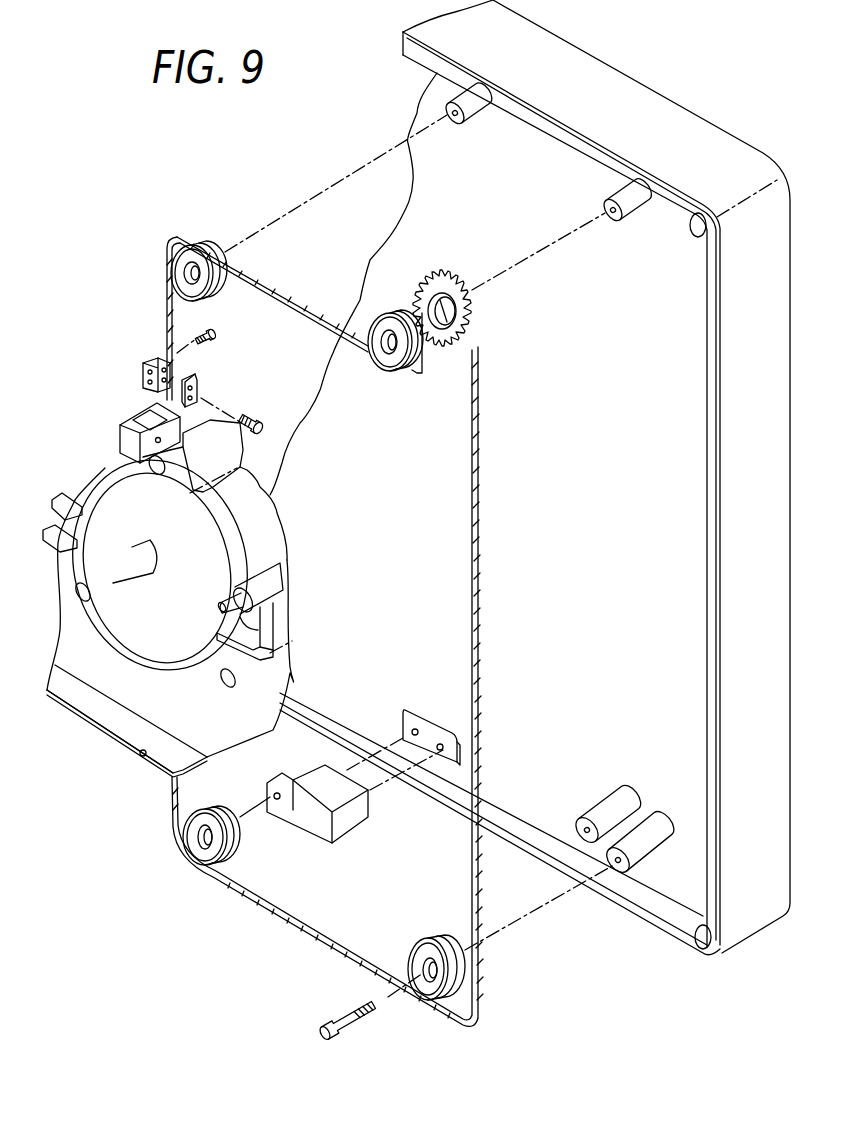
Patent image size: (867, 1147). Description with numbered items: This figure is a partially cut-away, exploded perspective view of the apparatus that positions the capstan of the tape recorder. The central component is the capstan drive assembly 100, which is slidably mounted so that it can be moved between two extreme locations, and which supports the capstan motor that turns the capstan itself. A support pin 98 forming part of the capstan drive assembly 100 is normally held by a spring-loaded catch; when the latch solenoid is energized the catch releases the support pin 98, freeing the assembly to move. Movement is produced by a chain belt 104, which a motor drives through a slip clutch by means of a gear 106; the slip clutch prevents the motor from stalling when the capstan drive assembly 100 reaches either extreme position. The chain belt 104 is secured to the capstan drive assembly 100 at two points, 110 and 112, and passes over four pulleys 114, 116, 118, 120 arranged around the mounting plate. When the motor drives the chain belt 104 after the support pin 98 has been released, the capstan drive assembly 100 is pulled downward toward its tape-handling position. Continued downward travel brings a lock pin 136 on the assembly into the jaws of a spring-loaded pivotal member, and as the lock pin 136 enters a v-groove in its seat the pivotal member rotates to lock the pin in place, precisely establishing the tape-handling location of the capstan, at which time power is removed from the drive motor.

The support pin 98 is at (140, 413).
The capstan drive assembly 100 is at (167, 757).
The chain belt 104 is at (479, 513).
The gear 106 is at (473, 312).
The securing point 110 is at (142, 347).
The securing point 112 is at (160, 767).
The pulley 114 is at (178, 263).
The pulley 116 is at (392, 363).
The pulley 118 is at (420, 947).
The pulley 120 is at (240, 840).
The lock pin 136 is at (140, 755).